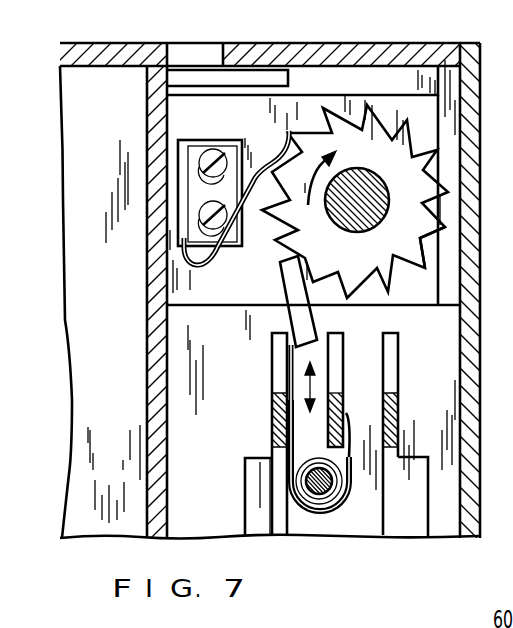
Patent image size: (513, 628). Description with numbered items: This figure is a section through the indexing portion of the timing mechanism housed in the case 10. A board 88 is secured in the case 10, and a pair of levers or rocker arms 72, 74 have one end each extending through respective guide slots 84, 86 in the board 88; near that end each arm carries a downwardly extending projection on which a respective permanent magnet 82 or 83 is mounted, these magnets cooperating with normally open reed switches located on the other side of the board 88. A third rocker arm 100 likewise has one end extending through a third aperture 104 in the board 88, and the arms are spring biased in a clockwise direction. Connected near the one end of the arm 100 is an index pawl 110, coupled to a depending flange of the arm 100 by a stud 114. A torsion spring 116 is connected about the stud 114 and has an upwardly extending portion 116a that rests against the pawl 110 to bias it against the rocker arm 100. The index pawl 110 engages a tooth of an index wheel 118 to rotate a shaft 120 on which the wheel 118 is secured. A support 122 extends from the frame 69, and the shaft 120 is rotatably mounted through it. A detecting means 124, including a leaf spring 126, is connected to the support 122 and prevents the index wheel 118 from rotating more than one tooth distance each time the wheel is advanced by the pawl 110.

The case 10 is at (159, 43).
The frame 69 is at (160, 386).
The board 88 is at (472, 397).
The detecting means 124 is at (211, 138).
The support 122 is at (378, 107).
The shaft 120 is at (388, 187).
The index wheel 118 is at (418, 236).
The leaf spring 126 is at (208, 270).
The index pawl 110 is at (288, 267).
The guide slot 86 is at (278, 382).
The rocker arm 74 is at (283, 423).
The third aperture 104 is at (336, 362).
The third rocker arm 100 is at (347, 412).
The guide slot 84 is at (392, 362).
The rocker arm 72 is at (393, 405).
The permanent magnet 83 is at (260, 508).
The permanent magnet 82 is at (412, 527).
The upwardly extending portion 116a is at (290, 358).
The torsion spring 116 is at (353, 503).
The stud 114 is at (323, 492).